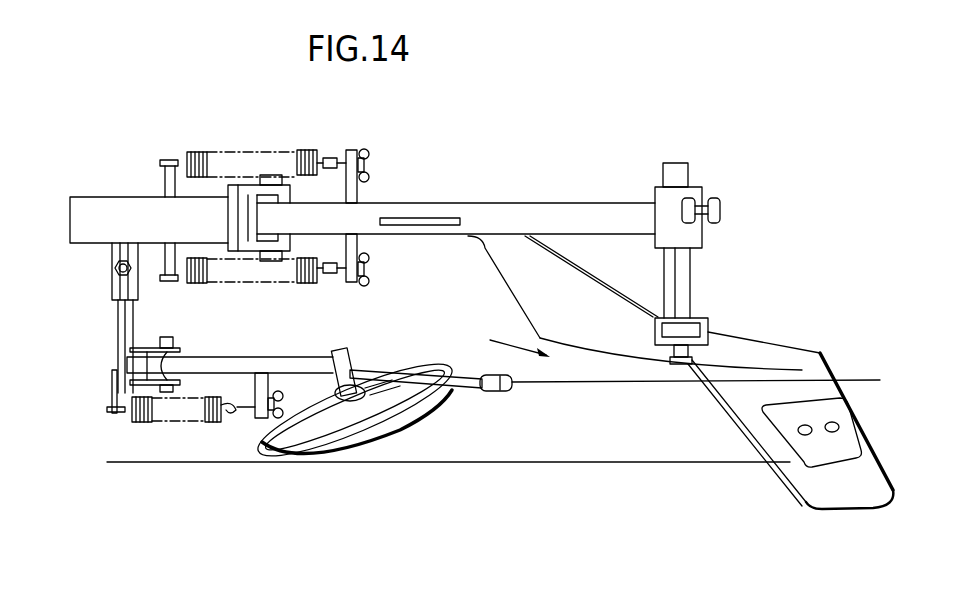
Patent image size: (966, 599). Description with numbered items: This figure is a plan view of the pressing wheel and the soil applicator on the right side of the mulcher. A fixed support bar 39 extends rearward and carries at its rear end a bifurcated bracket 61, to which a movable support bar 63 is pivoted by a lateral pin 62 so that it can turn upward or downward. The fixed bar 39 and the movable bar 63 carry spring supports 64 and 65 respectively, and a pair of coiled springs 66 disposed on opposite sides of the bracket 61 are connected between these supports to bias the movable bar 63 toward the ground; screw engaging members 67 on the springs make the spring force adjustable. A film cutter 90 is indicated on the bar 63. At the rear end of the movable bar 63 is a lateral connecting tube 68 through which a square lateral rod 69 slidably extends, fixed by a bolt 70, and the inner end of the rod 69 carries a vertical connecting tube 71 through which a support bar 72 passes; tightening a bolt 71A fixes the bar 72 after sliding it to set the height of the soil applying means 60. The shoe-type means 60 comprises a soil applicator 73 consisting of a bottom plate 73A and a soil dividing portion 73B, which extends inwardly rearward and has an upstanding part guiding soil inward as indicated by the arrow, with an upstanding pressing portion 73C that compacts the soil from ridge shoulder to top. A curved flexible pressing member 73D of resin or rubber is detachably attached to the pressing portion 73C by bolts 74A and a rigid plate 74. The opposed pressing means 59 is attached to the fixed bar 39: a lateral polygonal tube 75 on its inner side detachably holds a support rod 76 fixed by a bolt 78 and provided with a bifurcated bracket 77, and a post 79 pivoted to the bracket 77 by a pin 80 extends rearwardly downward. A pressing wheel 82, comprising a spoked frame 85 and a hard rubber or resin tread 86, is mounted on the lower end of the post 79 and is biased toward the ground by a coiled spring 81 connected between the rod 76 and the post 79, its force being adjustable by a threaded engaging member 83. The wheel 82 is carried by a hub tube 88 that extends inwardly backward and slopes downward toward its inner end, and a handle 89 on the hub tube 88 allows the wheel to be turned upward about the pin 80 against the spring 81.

The support bar 39 is at (100, 210).
The pressing means 59 is at (355, 427).
The soil applying means 60 is at (747, 430).
The bifurcated bracket 61 is at (243, 188).
The lateral pin 62 is at (272, 182).
The movable support bar 63 is at (512, 218).
The spring support 64 is at (160, 172).
The spring support 65 is at (353, 198).
The coiled spring 66 is at (300, 157).
The screw engaging member 67 is at (364, 156).
The lateral connecting tube 68 is at (690, 192).
The lateral rod 69 is at (685, 297).
The bolt 70 is at (720, 207).
The vertical connecting tube 71 is at (703, 317).
The bolt 71A is at (683, 377).
The support bar 72 is at (710, 330).
The soil applicator 73 is at (697, 396).
The bottom plate 73A is at (634, 365).
The soil dividing portion 73B is at (588, 330).
The pressing portion 73C is at (830, 360).
The flexible pressing member 73D is at (823, 487).
The rigid plate 74 is at (855, 457).
The bolt 74A is at (835, 428).
The lateral polygonal tube 75 is at (114, 268).
The support rod 76 is at (116, 327).
The bifurcated bracket 77 is at (113, 395).
The bolt 78 is at (123, 275).
The post 79 is at (250, 362).
The pin 80 is at (169, 338).
The coiled spring 81 is at (142, 422).
The pressing wheel 82 is at (380, 436).
The threaded engaging member 83 is at (263, 422).
The spoked frame 85 is at (297, 432).
The tread 86 is at (417, 403).
The hub tube 88 is at (352, 368).
The handle 89 is at (490, 388).
The film cutter 90 is at (440, 222).